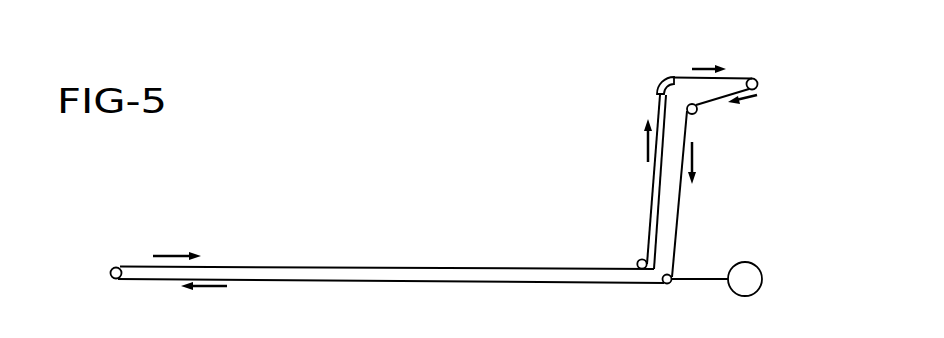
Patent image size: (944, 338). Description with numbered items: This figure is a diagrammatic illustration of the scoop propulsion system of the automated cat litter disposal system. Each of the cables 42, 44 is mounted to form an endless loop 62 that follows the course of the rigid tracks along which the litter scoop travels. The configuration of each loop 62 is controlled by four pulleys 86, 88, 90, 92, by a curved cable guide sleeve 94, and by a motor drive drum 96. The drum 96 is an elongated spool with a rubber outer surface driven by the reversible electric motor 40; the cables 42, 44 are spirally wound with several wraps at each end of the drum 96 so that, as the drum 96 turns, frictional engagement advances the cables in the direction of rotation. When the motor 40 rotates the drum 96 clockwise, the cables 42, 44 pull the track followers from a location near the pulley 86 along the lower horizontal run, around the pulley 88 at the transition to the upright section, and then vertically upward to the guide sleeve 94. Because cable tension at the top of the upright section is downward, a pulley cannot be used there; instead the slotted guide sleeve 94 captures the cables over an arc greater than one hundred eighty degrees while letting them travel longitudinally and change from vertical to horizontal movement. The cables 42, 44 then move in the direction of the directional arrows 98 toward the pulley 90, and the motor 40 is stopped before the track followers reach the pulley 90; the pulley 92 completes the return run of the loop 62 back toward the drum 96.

The electric motor 40 is at (759, 269).
The cable 42 is at (737, 183).
The cable 44 is at (702, 178).
The endless loop 62 is at (653, 205).
The pulley 86 is at (110, 269).
The pulley 88 is at (637, 263).
The pulley 90 is at (758, 84).
The pulley 92 is at (697, 112).
The curved cable guide sleeve 94 is at (658, 76).
The motor drive drum 96 is at (664, 288).
The directional arrows 98 is at (701, 67).